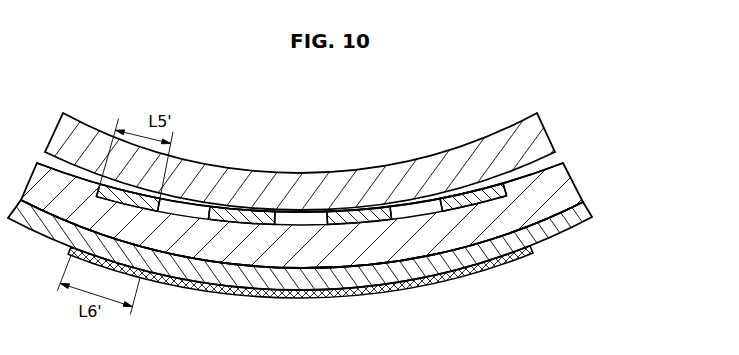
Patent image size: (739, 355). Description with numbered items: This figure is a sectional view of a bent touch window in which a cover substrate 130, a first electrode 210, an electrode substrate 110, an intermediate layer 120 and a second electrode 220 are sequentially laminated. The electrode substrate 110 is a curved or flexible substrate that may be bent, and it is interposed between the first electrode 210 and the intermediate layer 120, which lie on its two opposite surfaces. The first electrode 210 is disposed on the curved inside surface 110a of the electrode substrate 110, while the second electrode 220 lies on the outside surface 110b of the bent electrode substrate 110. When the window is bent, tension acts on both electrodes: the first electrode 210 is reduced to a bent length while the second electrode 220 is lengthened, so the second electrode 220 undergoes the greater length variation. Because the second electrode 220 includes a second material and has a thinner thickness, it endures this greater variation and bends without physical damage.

The electrode substrate 110 is at (568, 185).
The curved inside surface of the electrode substrate 110a is at (408, 203).
The outside surface of the electrode substrate 110b is at (472, 253).
The intermediate layer 120 is at (353, 282).
The cover substrate 130 is at (350, 180).
The first electrode 210 is at (462, 193).
The second electrode 220 is at (266, 295).